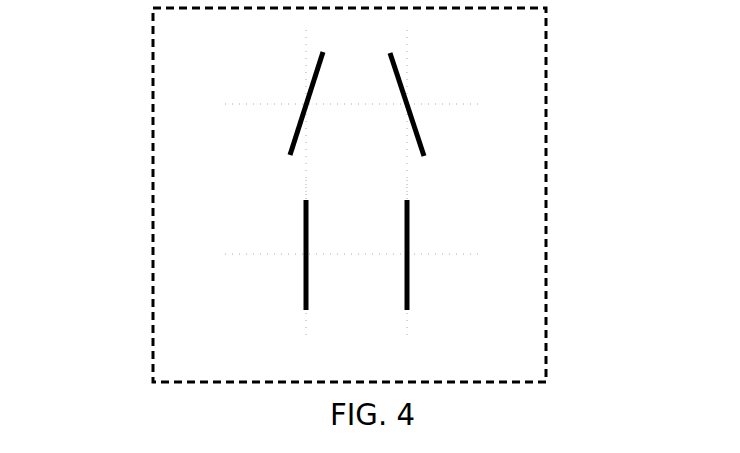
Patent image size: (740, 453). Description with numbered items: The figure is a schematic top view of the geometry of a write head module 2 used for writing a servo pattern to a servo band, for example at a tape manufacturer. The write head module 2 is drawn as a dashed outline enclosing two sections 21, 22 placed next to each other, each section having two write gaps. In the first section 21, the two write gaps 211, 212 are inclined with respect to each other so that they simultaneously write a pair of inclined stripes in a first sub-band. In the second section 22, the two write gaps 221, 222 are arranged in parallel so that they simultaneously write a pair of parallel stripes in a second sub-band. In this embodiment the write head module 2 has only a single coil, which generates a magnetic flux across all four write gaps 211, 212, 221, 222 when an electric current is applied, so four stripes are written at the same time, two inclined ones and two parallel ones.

The write head module 2 is at (546, 195).
The first section 21 is at (130, 92).
The write gap 211 is at (320, 70).
The write gap 212 is at (392, 70).
The second section 22 is at (140, 257).
The write gap 221 is at (303, 288).
The write gap 222 is at (410, 289).